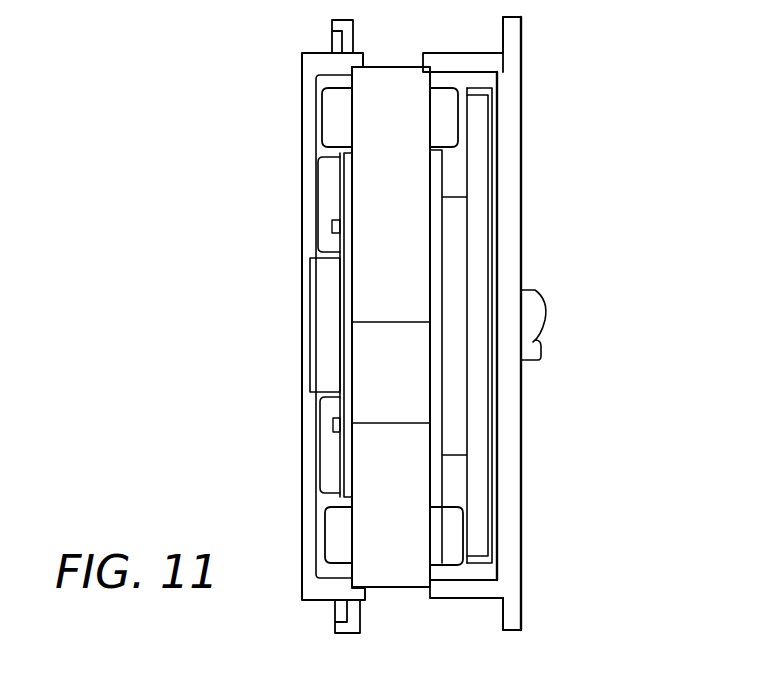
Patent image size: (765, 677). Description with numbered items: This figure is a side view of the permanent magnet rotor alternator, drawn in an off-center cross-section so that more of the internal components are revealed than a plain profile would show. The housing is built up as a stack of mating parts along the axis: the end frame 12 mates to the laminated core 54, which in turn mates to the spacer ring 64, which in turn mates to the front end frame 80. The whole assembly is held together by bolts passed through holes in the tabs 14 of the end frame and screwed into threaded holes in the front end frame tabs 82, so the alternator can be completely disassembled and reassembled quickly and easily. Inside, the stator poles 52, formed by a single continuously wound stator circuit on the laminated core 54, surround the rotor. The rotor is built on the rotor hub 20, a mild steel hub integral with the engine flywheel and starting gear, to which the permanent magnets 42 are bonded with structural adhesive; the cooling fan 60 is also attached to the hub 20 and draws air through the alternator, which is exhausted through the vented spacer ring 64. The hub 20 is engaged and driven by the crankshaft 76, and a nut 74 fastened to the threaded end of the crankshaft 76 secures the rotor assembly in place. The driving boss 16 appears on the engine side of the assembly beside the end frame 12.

The end frame 12 is at (330, 60).
The tabs 14 is at (334, 624).
The driving boss 16 is at (325, 297).
The rotor hub 20 is at (455, 223).
The permanent magnets 42 is at (348, 181).
The stator poles 52 is at (334, 116).
The laminated core 54 is at (392, 72).
The cooling fan 60 is at (344, 240).
The spacer ring 64 is at (450, 600).
The nut 74 is at (333, 447).
The crankshaft 76 is at (533, 342).
The front end frame 80 is at (515, 122).
The front end frame tabs 82 is at (522, 46).